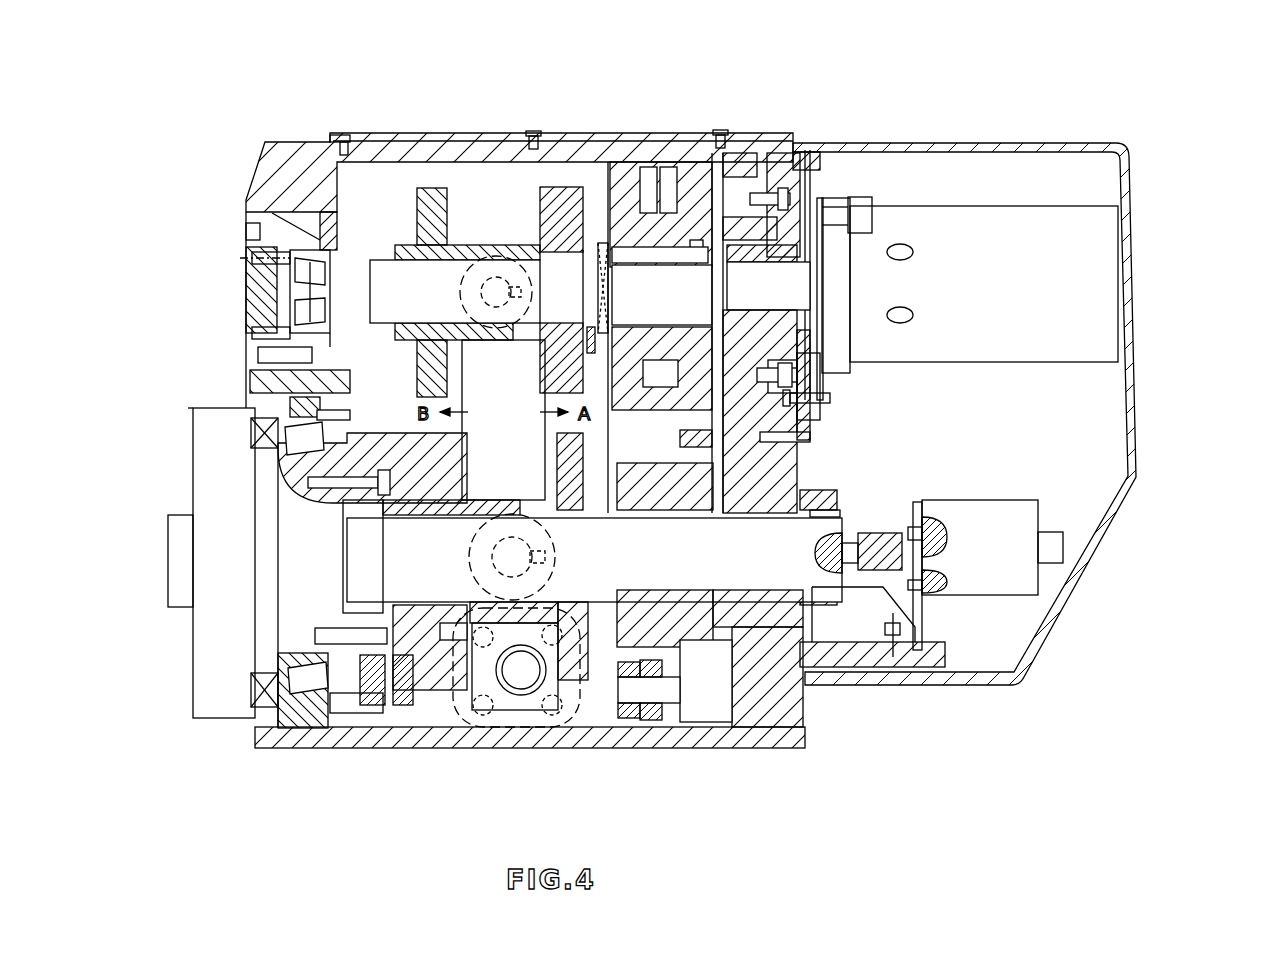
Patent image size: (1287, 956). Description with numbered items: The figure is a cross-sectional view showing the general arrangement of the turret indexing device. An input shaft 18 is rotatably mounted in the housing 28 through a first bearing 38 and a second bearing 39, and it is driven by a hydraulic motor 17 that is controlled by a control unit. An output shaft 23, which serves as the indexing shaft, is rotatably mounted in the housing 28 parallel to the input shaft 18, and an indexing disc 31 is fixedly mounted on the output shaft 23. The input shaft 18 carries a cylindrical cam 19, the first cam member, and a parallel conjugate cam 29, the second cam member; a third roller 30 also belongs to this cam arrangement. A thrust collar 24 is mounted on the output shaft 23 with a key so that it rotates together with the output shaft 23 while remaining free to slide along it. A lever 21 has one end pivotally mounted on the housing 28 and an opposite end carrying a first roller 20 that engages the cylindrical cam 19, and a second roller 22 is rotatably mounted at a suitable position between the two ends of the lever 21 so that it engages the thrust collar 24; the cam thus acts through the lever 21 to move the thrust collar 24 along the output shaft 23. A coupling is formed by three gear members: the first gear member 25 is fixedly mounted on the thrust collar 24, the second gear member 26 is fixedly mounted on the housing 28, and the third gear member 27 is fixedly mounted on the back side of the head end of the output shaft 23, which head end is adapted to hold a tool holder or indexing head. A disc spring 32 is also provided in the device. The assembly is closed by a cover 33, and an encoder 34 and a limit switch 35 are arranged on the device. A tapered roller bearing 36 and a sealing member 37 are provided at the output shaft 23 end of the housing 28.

The hydraulic motor 17 is at (1028, 414).
The input shaft 18 is at (202, 301).
The cylindrical cam 19 is at (644, 217).
The first roller 20 is at (482, 219).
The lever 21 is at (528, 281).
The second roller 22 is at (489, 405).
The output shaft 23 is at (176, 541).
The thrust collar 24 is at (560, 610).
The first gear member of the coupling 25 is at (619, 627).
The second gear member of the coupling 26 is at (359, 728).
The third gear member of the coupling 27 is at (366, 740).
The housing 28 is at (434, 218).
The parallel conjugate cam 29 is at (665, 298).
The third roller 30 is at (530, 722).
The indexing disc 31 is at (689, 727).
The disc spring 32 is at (674, 193).
The cover 33 is at (1040, 300).
The encoder 34 is at (1031, 560).
The limit switch 35 is at (1023, 479).
The tapered roller bearing 36 is at (227, 744).
The sealing member 37 is at (227, 728).
The first bearing 38 is at (730, 308).
The second bearing 39 is at (182, 295).